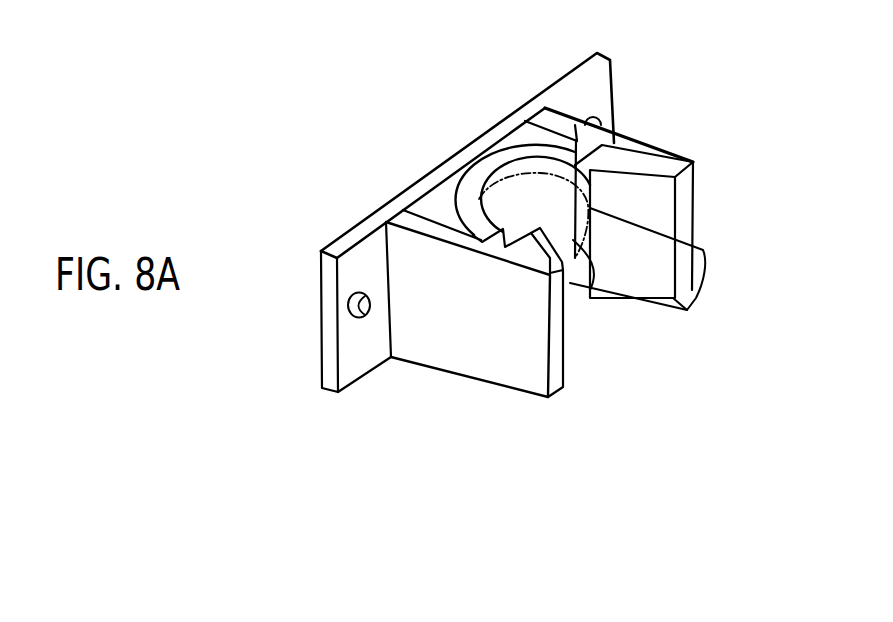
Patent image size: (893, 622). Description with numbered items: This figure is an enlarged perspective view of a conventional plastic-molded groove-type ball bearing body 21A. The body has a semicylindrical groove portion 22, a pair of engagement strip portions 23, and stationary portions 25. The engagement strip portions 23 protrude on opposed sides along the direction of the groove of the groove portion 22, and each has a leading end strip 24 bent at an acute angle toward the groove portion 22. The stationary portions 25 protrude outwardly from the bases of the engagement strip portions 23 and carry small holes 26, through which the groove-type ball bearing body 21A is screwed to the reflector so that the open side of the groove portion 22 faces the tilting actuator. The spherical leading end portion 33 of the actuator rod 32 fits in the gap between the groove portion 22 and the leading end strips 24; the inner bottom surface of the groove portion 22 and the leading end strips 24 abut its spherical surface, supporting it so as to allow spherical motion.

The groove-type ball bearing body 21A is at (529, 84).
The semicylindrical groove portion 22 is at (432, 168).
The engagement strip portions 23 is at (448, 348).
The leading end strips 24 is at (627, 190).
The stationary portions 25 is at (330, 375).
The small holes 26 is at (357, 305).
The actuator rod 32 is at (700, 290).
The spherical leading end portion 33 is at (500, 133).